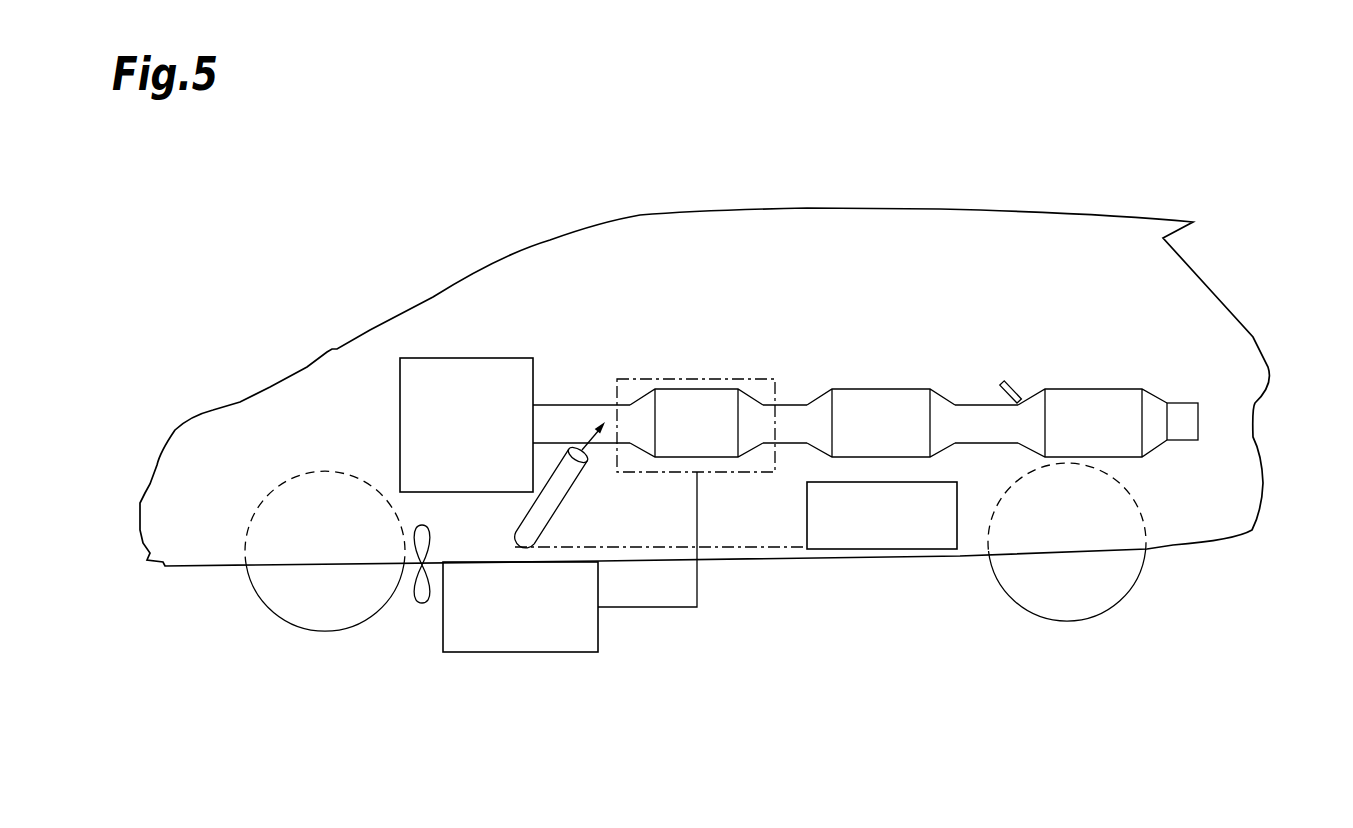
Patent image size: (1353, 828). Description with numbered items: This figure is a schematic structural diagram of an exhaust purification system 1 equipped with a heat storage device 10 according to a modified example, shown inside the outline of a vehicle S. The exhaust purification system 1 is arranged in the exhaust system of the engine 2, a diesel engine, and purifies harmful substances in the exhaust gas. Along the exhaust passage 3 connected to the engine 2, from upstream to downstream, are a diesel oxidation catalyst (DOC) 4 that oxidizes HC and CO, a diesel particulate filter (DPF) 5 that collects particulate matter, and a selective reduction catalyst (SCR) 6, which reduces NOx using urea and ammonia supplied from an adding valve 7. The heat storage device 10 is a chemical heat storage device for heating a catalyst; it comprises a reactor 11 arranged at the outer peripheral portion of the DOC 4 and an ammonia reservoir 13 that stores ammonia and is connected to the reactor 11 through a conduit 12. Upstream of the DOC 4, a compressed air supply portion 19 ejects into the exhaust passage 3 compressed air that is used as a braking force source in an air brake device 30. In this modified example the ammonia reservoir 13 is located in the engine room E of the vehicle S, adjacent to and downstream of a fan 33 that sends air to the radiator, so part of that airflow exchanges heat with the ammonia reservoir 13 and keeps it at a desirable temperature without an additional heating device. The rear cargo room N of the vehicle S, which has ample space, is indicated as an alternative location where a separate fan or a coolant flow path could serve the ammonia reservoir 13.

The exhaust purification system 1 is at (876, 317).
The engine 2 is at (513, 357).
The exhaust passage 3 is at (580, 405).
The diesel oxidation catalyst (DOC) 4 is at (717, 389).
The diesel particulate filter (DPF) 5 is at (900, 389).
The selective reduction catalyst (SCR) 6 is at (1115, 389).
The adding valve 7 is at (1017, 383).
The heat storage device 10 is at (744, 634).
The reactor 11 is at (755, 377).
The conduit 12 is at (698, 510).
The ammonia reservoir 13 is at (550, 652).
The compressed air supply portion 19 is at (567, 502).
The air brake device 30 is at (905, 550).
The fan 33 is at (430, 538).
The engine room E is at (447, 357).
The vehicle S is at (1098, 213).
The rear cargo room N is at (1200, 482).